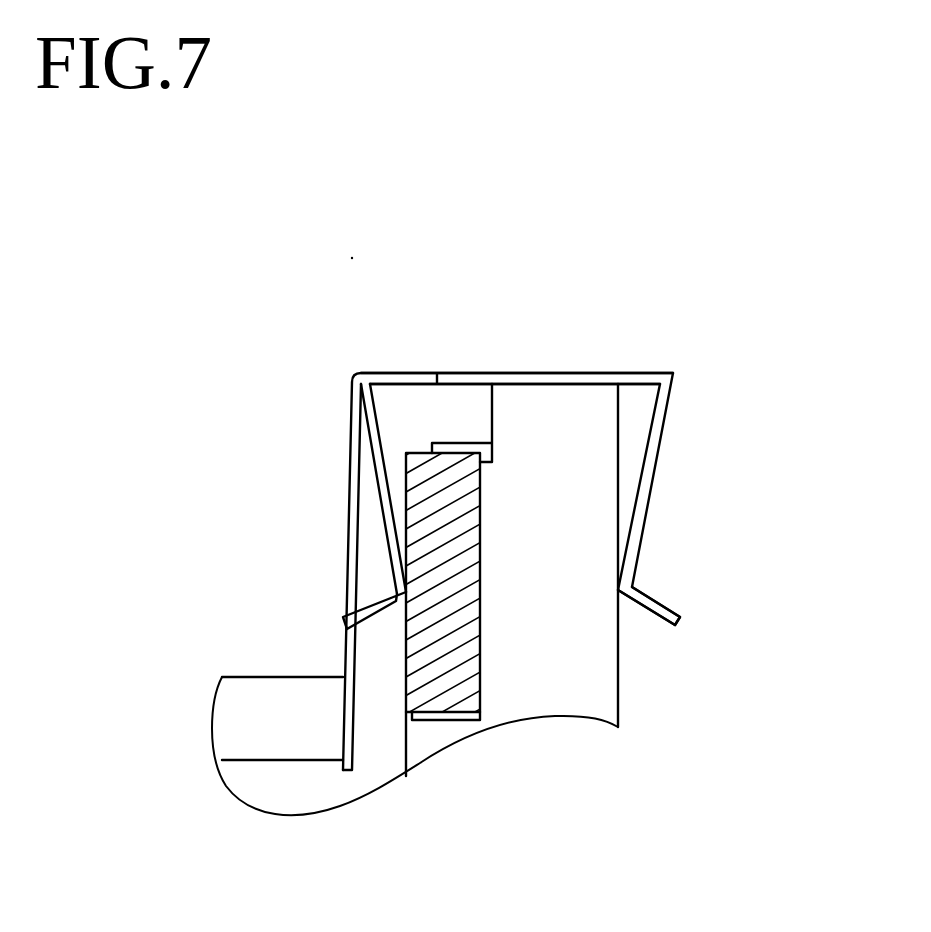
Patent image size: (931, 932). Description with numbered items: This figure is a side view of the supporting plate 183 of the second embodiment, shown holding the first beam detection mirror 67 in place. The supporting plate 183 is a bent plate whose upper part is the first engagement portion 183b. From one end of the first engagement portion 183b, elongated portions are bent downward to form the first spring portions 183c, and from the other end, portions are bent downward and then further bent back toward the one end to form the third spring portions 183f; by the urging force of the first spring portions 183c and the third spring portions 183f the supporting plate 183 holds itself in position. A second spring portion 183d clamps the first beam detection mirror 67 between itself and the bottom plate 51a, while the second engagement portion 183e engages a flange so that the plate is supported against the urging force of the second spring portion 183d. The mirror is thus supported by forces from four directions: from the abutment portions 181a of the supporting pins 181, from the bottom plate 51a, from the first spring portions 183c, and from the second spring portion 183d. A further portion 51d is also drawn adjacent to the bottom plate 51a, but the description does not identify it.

The bottom plate 51a is at (433, 716).
The housing boss 51d is at (273, 698).
The first beam detection mirror 67 is at (452, 672).
The supporting pins 181 is at (653, 676).
The abutment portions 181a is at (478, 498).
The supporting plate 183 is at (693, 358).
The first engagement portion 183b is at (537, 374).
The first spring portions 183c is at (381, 495).
The second spring portion 183d is at (470, 444).
The second engagement portion 183e is at (354, 572).
The third spring portions 183f is at (640, 523).